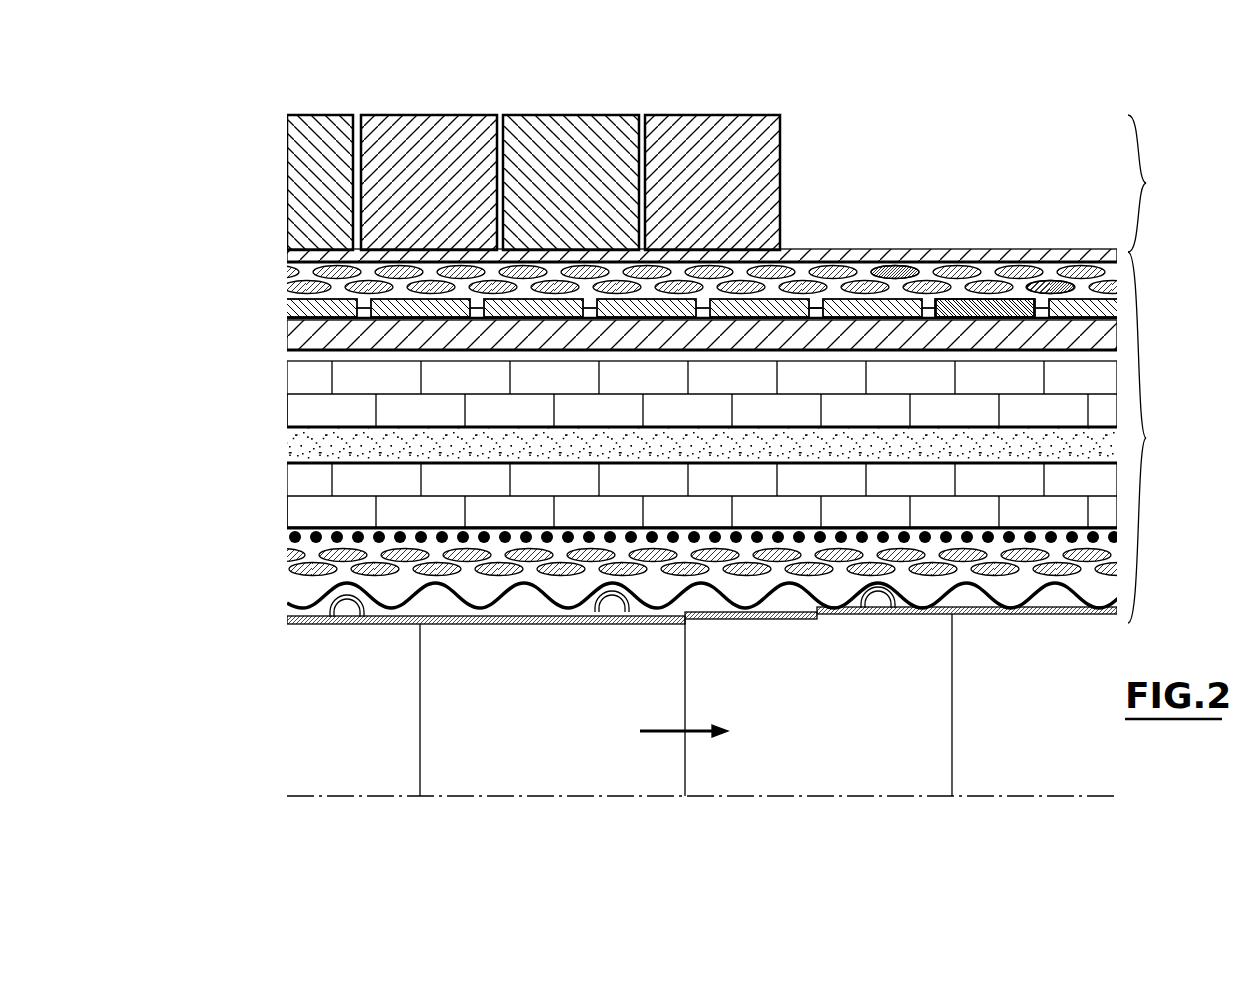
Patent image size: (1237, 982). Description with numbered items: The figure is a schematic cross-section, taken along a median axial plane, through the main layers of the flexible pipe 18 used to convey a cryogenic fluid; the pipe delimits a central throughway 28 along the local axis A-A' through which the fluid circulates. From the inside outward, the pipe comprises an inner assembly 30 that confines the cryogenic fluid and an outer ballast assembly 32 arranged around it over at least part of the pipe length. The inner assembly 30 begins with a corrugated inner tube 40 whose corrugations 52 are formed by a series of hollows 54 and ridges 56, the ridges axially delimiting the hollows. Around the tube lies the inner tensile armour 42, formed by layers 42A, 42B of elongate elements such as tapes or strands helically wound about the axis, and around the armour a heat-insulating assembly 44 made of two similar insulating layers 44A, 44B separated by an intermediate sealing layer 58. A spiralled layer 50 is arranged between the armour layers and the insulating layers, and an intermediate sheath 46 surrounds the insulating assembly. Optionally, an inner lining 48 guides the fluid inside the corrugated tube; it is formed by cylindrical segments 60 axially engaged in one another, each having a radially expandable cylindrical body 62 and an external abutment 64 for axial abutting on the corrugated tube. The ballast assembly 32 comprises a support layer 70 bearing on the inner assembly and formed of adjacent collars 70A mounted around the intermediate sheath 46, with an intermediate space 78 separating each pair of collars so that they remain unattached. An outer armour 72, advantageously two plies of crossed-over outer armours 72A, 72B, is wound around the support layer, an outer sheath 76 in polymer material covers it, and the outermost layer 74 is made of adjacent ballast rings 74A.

The flexible pipe 18 is at (753, 810).
The central throughway 28 is at (686, 705).
The inner assembly 30 is at (1153, 437).
The outer ballast assembly 32 is at (1153, 183).
The corrugated inner tube 40 is at (258, 618).
The inner tensile armour 42 is at (228, 559).
The tensile armour layer 42A is at (295, 569).
The tensile armour layer 42B is at (348, 556).
The heat-insulating assembly 44 is at (248, 527).
The heat-insulating layer 44A is at (295, 514).
The heat-insulating layer 44B is at (295, 376).
The intermediate sheath 46 is at (258, 336).
The inner lining 48 is at (300, 627).
The spiralled layer 50 is at (293, 540).
The corrugations 52 is at (436, 585).
The hollows 54 is at (418, 626).
The ridges 56 is at (502, 605).
The intermediate sealing layer 58 is at (297, 447).
The cylindrical segment 60 is at (733, 638).
The cylindrical body 62 is at (825, 621).
The external abutment 64 is at (878, 598).
The support layer 70 is at (260, 307).
The collar 70A is at (975, 308).
The outer armour 72 is at (281, 263).
The outer armour ply 72A is at (906, 272).
The outer armour ply 72B is at (1048, 287).
The outer layer 74 is at (256, 179).
The ballast ring 74A is at (708, 132).
The outer sheath 76 is at (287, 257).
The intermediate space 78 is at (812, 308).